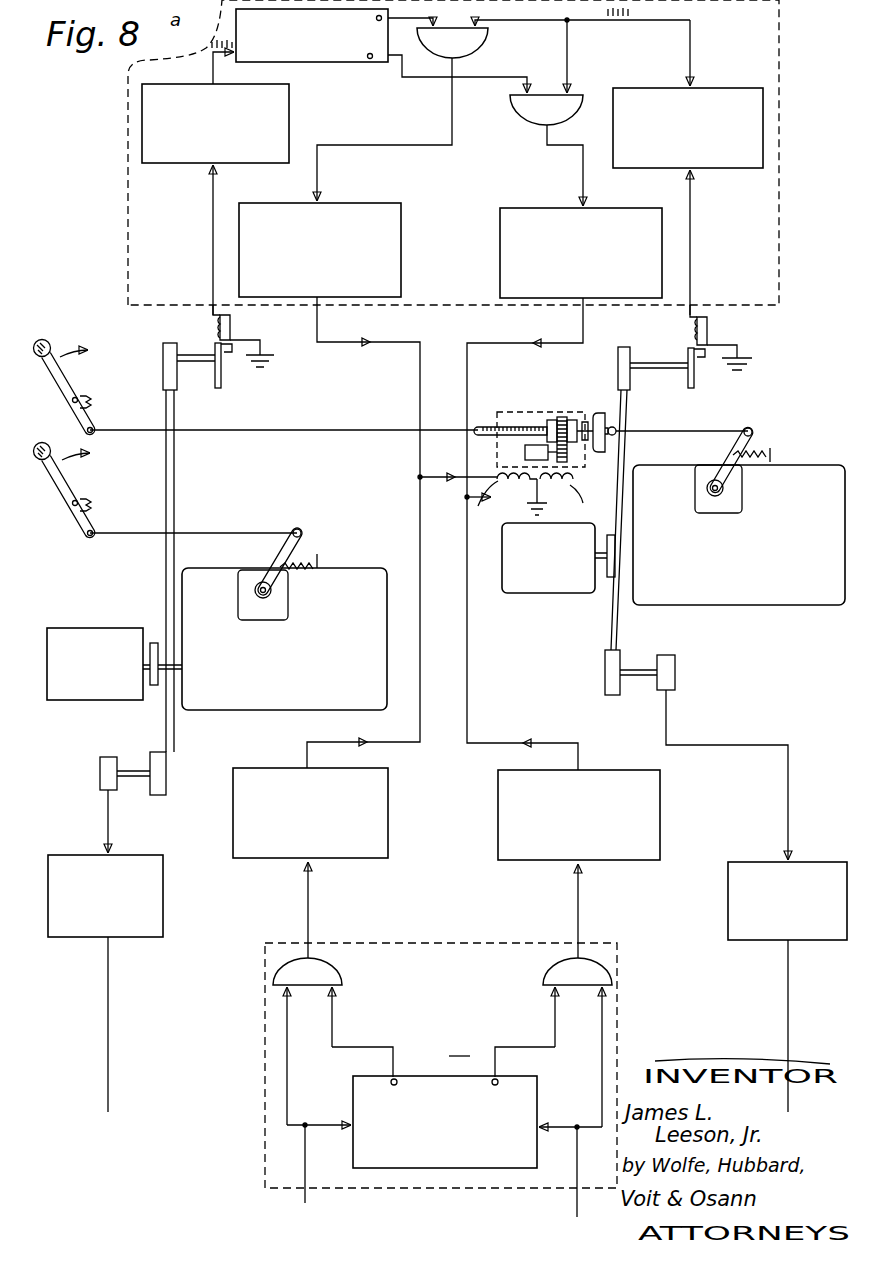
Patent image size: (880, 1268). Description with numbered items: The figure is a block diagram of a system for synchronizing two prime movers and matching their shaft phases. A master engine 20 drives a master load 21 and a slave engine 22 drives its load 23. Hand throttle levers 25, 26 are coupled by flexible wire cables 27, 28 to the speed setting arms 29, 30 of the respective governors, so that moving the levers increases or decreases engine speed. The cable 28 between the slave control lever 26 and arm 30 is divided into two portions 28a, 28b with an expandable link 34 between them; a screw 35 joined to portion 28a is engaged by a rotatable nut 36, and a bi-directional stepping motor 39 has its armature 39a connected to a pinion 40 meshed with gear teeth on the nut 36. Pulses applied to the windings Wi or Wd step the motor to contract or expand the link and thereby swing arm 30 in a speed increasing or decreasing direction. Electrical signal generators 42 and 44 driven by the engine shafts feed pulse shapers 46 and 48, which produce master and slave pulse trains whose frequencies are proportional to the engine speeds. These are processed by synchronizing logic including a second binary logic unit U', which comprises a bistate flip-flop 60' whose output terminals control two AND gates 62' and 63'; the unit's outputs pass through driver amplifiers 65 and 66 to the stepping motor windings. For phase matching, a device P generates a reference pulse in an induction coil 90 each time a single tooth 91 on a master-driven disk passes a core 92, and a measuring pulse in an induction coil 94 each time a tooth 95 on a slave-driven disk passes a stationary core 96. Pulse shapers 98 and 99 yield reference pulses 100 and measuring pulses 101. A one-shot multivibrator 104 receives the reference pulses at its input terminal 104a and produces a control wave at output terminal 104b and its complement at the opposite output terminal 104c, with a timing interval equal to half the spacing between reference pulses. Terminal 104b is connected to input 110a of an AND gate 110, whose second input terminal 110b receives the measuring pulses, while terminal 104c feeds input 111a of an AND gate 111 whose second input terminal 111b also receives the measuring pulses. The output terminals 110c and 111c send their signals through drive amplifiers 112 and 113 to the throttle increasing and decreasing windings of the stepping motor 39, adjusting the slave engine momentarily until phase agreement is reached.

The master engine 20 is at (182, 589).
The master load 21 is at (111, 628).
The slave engine 22 is at (775, 605).
The load 23 is at (550, 594).
The hand throttle lever 25 is at (68, 486).
The slave control lever 26 is at (68, 383).
The flexible wire cable 27 is at (240, 533).
The flexible wire cable 28 is at (245, 430).
The cable portion 28a is at (353, 430).
The cable portion 28b is at (720, 431).
The speed setting arm 29 is at (300, 542).
The speed setting arm 30 is at (753, 446).
The expandable link 34 is at (563, 413).
The screw 35 is at (510, 426).
The nut 36 is at (558, 418).
The bi-directional stepping motor 39 is at (578, 472).
The armature 39a is at (525, 455).
The pinion 40 is at (574, 455).
The electrical signal generator 42 is at (100, 763).
The electrical signal generator 44 is at (675, 670).
The pulse shaper 46 is at (149, 861).
The pulse shaper 48 is at (751, 866).
The bistate flip-flop 60' is at (444, 1132).
The AND gate 62' is at (326, 993).
The AND gate 63' is at (558, 995).
The driver amplifier 65 is at (272, 772).
The driver amplifier 66 is at (622, 775).
The induction coil 90 is at (231, 326).
The tooth 91 is at (228, 350).
The core 92 is at (220, 328).
The induction coil 94 is at (697, 328).
The tooth 95 is at (698, 355).
The stationary core 96 is at (708, 328).
The pulse shaper 98 is at (142, 122).
The pulse shaper 99 is at (725, 91).
The reference pulses 100 is at (211, 50).
The measuring pulses 101 is at (634, 12).
The one-shot multivibrator 104 is at (313, 64).
The input triggering terminal 104a is at (224, 55).
The output terminal 104b is at (378, 17).
The opposite output terminal 104c is at (380, 57).
The AND gate 110 is at (488, 40).
The input 110a is at (433, 18).
The second input terminal 110b is at (478, 20).
The output terminal 110c is at (452, 145).
The AND gate 111 is at (521, 121).
The input 111a is at (527, 80).
The second input terminal 111b is at (568, 80).
The output terminal 111c is at (547, 140).
The drive amplifier 112 is at (373, 212).
The drive amplifier 113 is at (527, 213).
The phase matching device P is at (781, 38).
The second binary logic unit U' is at (457, 1065).